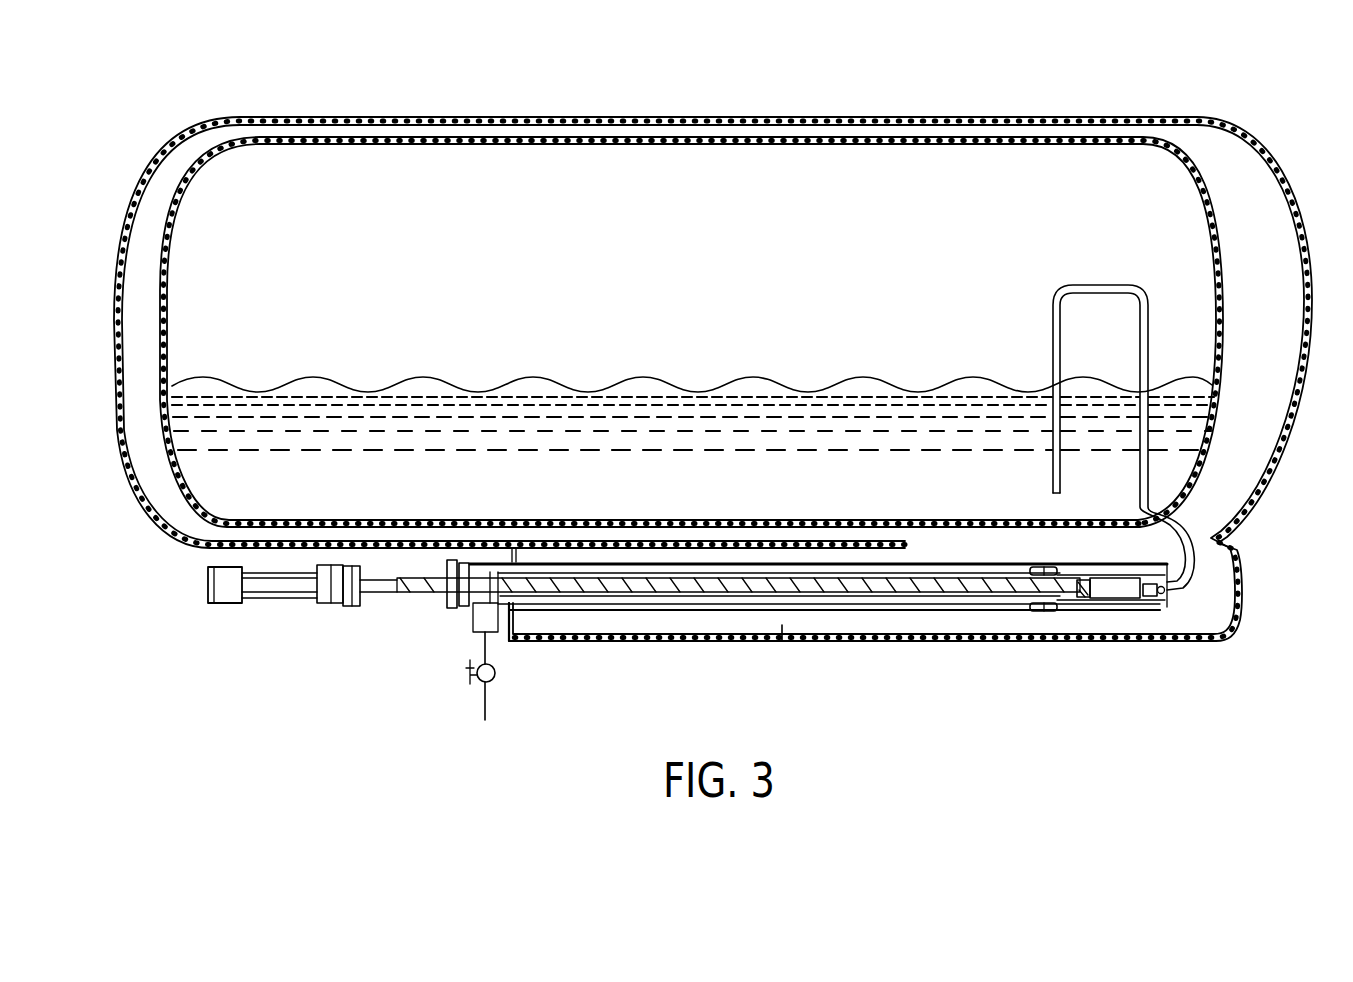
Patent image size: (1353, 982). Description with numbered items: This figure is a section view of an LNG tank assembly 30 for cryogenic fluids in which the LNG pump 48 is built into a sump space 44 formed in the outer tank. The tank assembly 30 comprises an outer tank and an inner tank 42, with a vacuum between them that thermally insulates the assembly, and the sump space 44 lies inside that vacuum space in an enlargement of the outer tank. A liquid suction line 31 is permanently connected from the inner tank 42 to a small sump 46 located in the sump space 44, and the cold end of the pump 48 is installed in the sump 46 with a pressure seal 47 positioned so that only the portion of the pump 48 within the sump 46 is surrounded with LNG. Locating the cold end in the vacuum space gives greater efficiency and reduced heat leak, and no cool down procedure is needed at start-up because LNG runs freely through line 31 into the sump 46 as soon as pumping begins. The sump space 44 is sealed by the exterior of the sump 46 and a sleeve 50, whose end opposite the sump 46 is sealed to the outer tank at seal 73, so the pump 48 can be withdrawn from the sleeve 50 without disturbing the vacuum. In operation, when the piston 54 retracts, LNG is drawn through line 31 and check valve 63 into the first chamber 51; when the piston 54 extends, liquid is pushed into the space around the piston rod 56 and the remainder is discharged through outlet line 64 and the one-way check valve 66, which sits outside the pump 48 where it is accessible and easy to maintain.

The LNG tank assembly 30 is at (110, 340).
The liquid suction line 31 is at (1150, 442).
The inner tank 42 is at (167, 291).
The sump space 44 is at (782, 627).
The sump 46 is at (1090, 593).
The pressure seal 47 is at (1022, 600).
The pump 48 is at (392, 608).
The sleeve 50 is at (650, 610).
The first chamber 51 is at (1123, 593).
The piston 54 is at (1083, 583).
The piston rod 56 is at (740, 615).
The check valve 63 is at (1162, 580).
The outlet line 64 is at (485, 715).
The one-way check valve 66 is at (463, 670).
The seal 73 is at (513, 617).